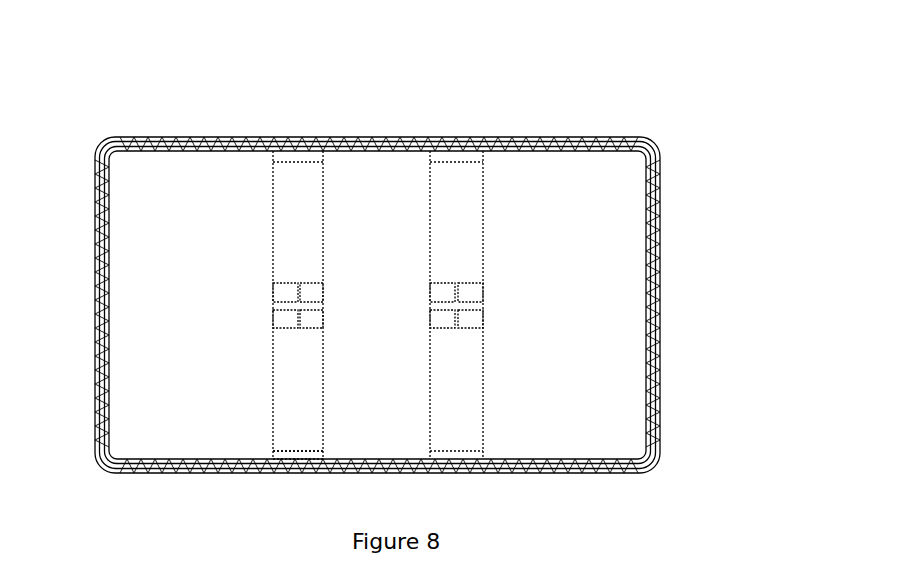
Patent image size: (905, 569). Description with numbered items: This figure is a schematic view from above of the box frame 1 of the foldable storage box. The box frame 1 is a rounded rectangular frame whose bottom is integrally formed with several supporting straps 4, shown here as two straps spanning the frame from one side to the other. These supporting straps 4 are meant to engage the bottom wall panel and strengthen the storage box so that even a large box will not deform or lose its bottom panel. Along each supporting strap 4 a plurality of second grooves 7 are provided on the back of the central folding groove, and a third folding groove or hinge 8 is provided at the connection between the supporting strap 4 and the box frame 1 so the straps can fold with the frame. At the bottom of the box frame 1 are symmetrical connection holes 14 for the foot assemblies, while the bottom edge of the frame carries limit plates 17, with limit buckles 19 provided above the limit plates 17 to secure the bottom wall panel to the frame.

The box frame 1 is at (427, 291).
The supporting strap 4 is at (466, 183).
The second groove 7 is at (283, 293).
The third folding groove or hinge 8 is at (297, 452).
The connection hole 14 is at (657, 170).
The limit plate 17 is at (660, 230).
The limit buckle 19 is at (658, 190).